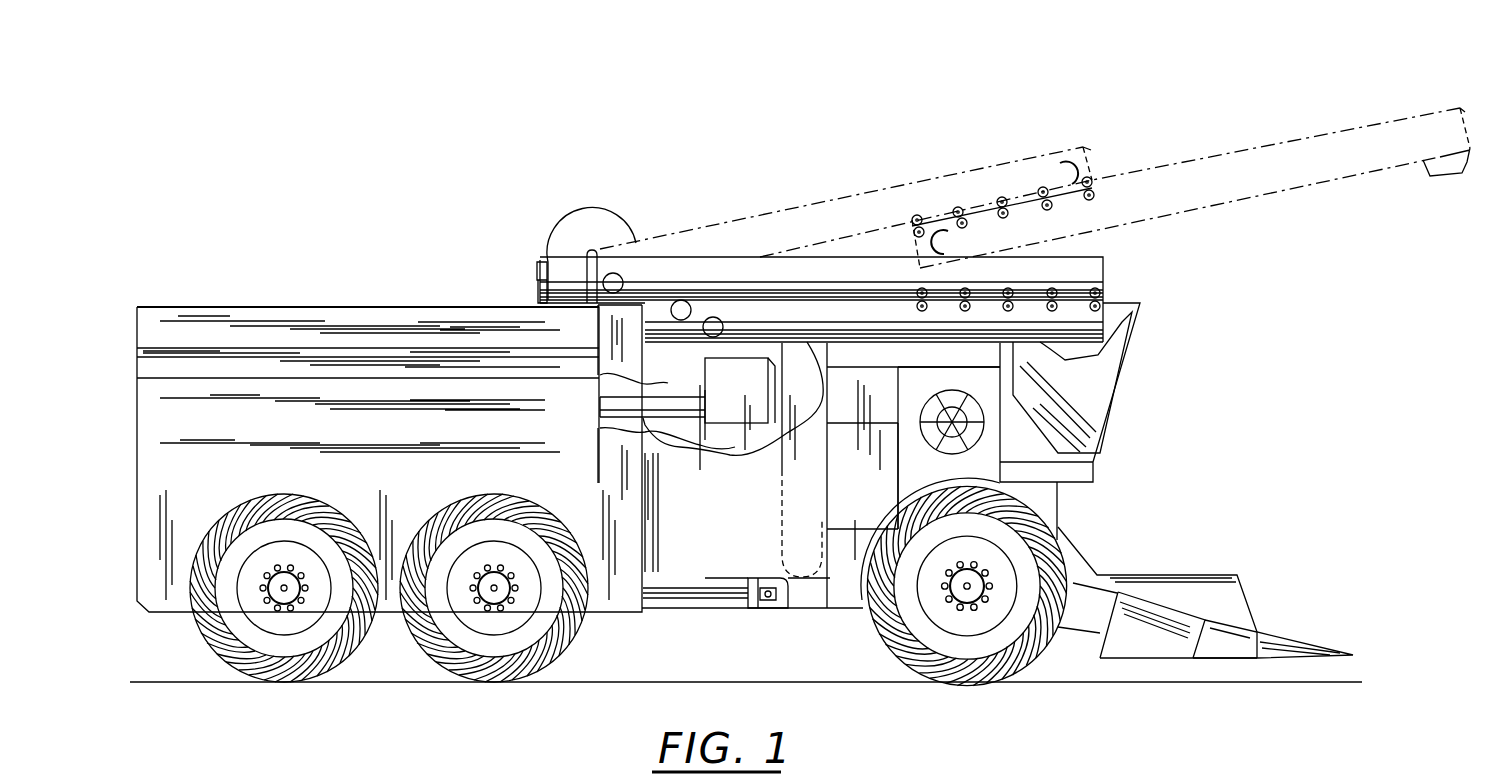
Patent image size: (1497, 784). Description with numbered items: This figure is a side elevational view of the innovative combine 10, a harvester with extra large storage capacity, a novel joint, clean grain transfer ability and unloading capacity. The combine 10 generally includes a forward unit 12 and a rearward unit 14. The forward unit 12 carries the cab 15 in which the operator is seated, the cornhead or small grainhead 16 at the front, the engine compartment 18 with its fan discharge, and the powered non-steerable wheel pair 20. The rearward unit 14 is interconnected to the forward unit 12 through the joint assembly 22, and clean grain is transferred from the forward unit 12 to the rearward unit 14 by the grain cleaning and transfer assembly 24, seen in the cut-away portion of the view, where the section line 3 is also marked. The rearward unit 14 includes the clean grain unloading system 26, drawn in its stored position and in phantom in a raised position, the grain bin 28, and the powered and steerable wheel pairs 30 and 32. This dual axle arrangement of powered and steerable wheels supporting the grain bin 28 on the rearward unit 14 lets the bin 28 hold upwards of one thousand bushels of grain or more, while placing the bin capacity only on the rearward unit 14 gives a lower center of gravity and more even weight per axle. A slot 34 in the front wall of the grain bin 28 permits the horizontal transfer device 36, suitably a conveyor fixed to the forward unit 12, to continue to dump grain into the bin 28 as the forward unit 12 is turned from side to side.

The combine 10 is at (832, 140).
The forward unit 12 is at (1207, 514).
The rearward unit 14 is at (225, 274).
The cab 15 is at (1117, 393).
The cornhead or small grainhead 16 is at (1238, 588).
The engine compartment 18 is at (952, 380).
The powered non-steerable wheel pair 20 is at (1007, 670).
The joint assembly 22 is at (758, 610).
The grain cleaning and transfer assembly 24 is at (782, 393).
The clean grain unloading system 26 is at (1103, 283).
The grain bin 28 is at (332, 306).
The powered and steerable wheel pair 30 is at (497, 680).
The powered and steerable wheel pair 32 is at (285, 680).
The slot 34 is at (640, 384).
The horizontal transfer device 36 is at (657, 418).
The section line 3- 3 is at (808, 574).